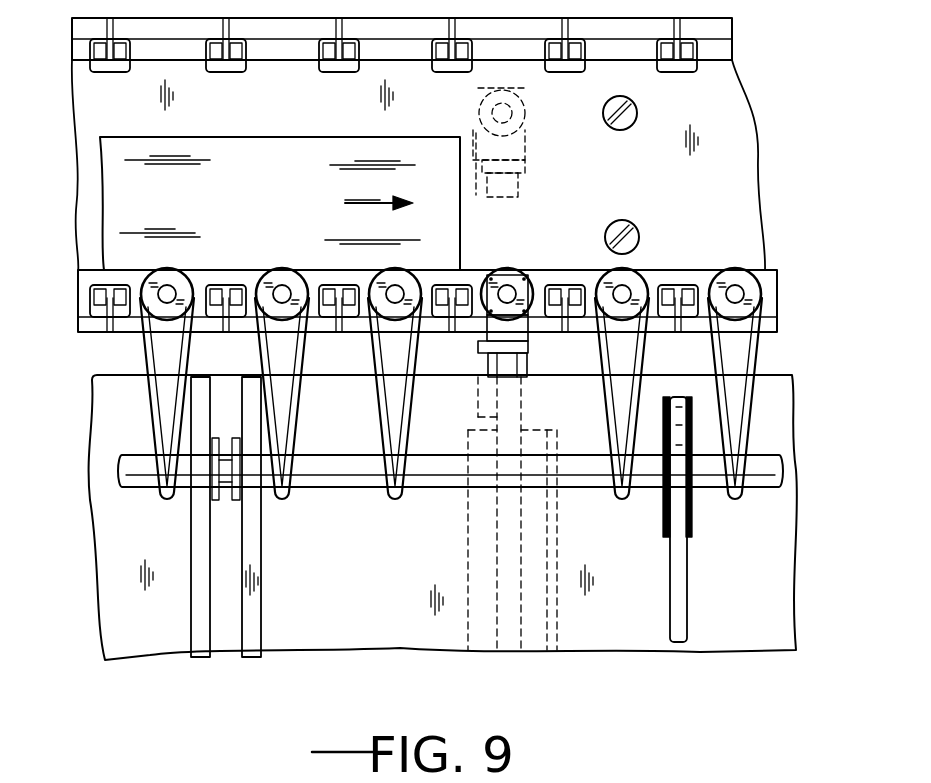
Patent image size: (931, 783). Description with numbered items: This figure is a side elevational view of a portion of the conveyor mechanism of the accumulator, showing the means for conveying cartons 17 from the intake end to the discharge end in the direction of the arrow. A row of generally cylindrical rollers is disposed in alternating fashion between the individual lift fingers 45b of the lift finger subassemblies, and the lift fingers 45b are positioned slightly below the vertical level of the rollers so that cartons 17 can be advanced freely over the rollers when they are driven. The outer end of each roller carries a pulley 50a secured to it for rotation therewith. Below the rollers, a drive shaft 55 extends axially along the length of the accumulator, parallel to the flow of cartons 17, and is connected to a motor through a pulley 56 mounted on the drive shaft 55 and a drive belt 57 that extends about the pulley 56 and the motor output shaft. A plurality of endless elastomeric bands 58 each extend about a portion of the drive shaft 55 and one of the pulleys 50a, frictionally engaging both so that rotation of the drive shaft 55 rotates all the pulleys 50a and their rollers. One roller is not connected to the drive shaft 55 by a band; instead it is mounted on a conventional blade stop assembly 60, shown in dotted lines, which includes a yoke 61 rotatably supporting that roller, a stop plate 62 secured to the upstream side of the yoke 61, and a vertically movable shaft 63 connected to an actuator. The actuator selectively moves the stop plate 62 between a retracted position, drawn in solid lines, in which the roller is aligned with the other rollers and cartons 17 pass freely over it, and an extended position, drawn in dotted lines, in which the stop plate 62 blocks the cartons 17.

The carton 17 is at (237, 216).
The lift finger 45b is at (560, 283).
The pulley 50a is at (737, 282).
The drive shaft 55 is at (522, 235).
The pulley 56 is at (692, 507).
The drive belt 57 is at (745, 572).
The endless elastomeric band 58 is at (646, 355).
The blade stop assembly 60 is at (455, 538).
The yoke 61 is at (478, 340).
The stop plate 62 is at (480, 370).
The shaft 63 is at (508, 403).